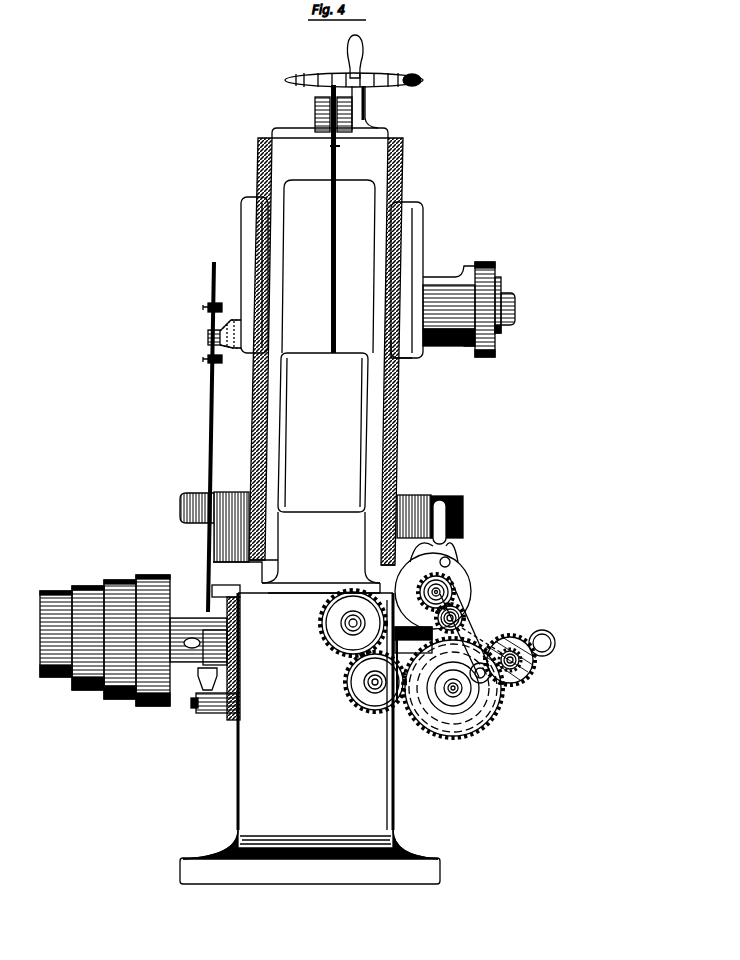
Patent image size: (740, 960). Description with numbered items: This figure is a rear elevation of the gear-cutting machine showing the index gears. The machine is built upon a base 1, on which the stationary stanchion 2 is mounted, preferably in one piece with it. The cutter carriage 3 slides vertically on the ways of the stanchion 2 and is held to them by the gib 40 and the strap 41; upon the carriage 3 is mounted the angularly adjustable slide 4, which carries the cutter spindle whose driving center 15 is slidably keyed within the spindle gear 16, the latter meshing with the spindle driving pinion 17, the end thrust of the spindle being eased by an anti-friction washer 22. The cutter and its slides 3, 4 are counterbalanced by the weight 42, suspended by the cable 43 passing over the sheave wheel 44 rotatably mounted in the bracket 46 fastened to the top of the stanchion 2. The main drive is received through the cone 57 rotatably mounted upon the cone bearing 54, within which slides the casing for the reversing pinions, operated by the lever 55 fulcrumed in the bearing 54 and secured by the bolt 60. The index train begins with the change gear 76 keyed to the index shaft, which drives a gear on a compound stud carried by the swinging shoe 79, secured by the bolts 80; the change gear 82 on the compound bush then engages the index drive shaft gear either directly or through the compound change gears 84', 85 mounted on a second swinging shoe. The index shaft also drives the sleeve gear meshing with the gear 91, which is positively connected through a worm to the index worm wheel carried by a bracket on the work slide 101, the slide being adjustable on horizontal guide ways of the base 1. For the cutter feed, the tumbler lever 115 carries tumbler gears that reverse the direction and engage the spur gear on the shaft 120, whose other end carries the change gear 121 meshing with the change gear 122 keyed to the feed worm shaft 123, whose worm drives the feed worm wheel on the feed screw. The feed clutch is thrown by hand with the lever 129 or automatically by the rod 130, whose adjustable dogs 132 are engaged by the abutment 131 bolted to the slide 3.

The base 1 is at (392, 786).
The stanchion 2 is at (392, 416).
The cutter carriage 3 is at (423, 228).
The slide 4 is at (467, 347).
The driving center 15 is at (501, 283).
The spindle gear 16 is at (488, 266).
The spindle driving pinion 17 is at (501, 328).
The anti-friction washer 22 is at (515, 318).
The gib 40 is at (404, 360).
The strap 41 is at (241, 243).
The weight 42 is at (340, 357).
The cable 43 is at (336, 298).
The sheave wheel 44 is at (338, 148).
The bracket 46 is at (289, 129).
The cone bearing 54 is at (197, 620).
The lever 55 is at (190, 650).
The cone 57 is at (99, 588).
The bolt 60 is at (202, 682).
The change gear 76 is at (452, 584).
The swinging shoe 79 is at (433, 572).
The bolt 80 is at (480, 731).
The change gear 82 is at (466, 616).
The compound change gear 84' is at (526, 670).
The compound change gear 85 is at (510, 633).
The gear 91 is at (470, 548).
The work slide 101 is at (180, 507).
The tumbler lever 115 is at (444, 500).
The shaft 120 is at (352, 630).
The change gear 121 is at (326, 641).
The change gear 122 is at (362, 710).
The feed worm shaft 123 is at (376, 689).
The lever 129 is at (212, 713).
The rod 130 is at (212, 463).
The abutment 131 is at (207, 341).
The dog 132 is at (207, 311).